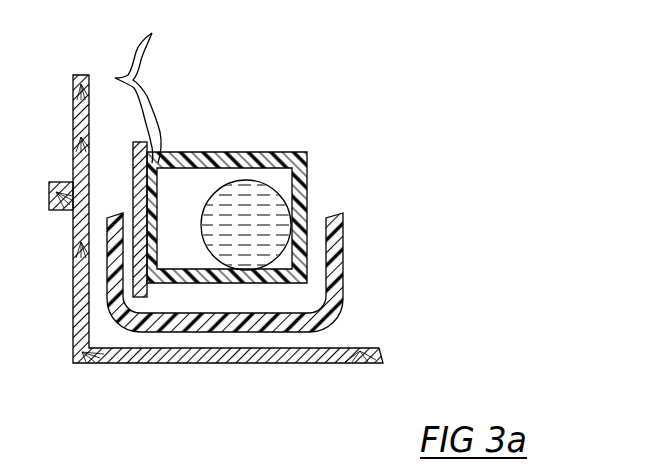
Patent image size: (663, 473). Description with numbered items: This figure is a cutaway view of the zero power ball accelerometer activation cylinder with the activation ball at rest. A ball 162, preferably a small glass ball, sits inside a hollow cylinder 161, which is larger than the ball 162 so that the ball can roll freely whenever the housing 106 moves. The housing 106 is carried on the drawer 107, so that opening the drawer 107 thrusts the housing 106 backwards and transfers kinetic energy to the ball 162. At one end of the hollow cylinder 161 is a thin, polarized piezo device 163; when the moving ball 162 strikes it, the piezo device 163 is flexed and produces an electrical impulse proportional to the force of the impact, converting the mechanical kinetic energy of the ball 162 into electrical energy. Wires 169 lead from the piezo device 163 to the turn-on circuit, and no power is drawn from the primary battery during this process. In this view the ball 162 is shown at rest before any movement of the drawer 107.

The housing 106 is at (260, 272).
The drawer 107 is at (243, 219).
The hollow cylinder 161 is at (227, 194).
The ball 162 is at (282, 225).
The piezo device 163 is at (176, 201).
The wires 169 is at (152, 33).